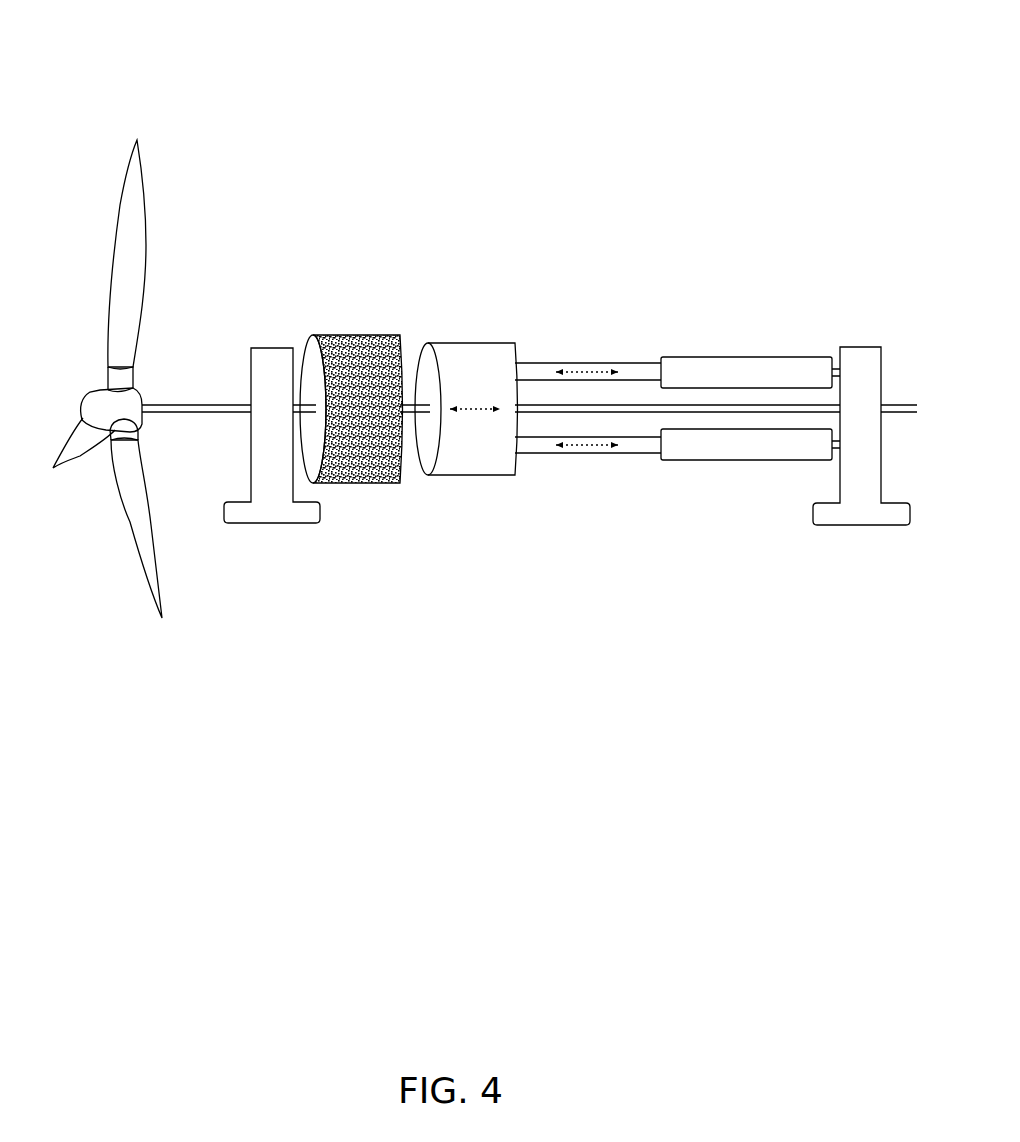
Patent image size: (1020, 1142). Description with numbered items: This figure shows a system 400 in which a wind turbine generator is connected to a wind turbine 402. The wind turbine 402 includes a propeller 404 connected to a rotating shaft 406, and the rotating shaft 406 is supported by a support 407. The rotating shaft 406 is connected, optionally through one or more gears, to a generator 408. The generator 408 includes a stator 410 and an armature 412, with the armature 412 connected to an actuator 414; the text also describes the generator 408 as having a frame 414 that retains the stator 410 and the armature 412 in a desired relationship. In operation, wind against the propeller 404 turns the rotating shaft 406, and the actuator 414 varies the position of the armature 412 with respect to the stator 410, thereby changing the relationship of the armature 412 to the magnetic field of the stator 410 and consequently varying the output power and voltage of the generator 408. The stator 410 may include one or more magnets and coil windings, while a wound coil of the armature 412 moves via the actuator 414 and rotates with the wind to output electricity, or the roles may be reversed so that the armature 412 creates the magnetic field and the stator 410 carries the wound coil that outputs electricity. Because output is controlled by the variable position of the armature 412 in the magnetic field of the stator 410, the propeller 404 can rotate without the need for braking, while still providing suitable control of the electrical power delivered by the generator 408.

The system 400 is at (425, 84).
The wind turbine 402 is at (218, 155).
The propeller 404 is at (108, 263).
The rotating shaft 406 is at (190, 405).
The support 407 is at (272, 347).
The generator 408 is at (815, 155).
The stator 410 is at (355, 335).
The armature 412 is at (468, 343).
The actuator 414 is at (705, 357).